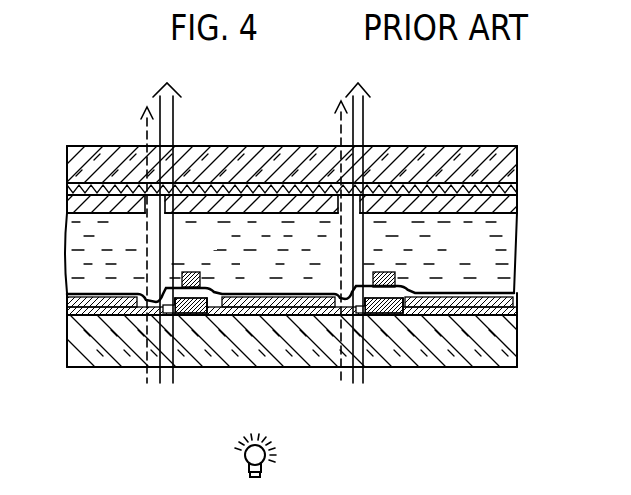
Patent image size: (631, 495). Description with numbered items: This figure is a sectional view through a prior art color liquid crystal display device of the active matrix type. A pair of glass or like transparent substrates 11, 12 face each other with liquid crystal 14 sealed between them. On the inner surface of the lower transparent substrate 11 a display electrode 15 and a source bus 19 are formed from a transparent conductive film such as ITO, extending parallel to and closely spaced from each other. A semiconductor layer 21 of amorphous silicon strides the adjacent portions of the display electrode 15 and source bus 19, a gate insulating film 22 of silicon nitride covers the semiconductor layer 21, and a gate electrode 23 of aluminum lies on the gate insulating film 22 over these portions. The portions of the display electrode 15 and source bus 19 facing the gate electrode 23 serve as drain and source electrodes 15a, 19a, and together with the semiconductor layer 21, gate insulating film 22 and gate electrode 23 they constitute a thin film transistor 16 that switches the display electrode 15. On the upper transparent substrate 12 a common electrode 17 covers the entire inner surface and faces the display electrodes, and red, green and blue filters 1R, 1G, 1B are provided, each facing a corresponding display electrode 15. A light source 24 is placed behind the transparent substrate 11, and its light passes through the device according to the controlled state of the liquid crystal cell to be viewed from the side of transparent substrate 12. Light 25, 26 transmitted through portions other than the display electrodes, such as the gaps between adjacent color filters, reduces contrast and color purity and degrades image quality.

The transparent substrate 11 is at (486, 367).
The transparent substrate 12 is at (481, 147).
The liquid crystal 14 is at (514, 267).
The display electrode 15 is at (300, 320).
The drain electrode 15a is at (226, 318).
The thin film transistor 16 is at (170, 322).
The common electrode 17 is at (518, 190).
The source bus 19 is at (176, 314).
The source electrode 19a is at (285, 364).
The semiconductor layer 21 is at (196, 314).
The gate insulating film 22 is at (250, 291).
The gate electrode 23 is at (196, 270).
The light source 24 is at (274, 455).
The light 25 is at (341, 127).
The light 26 is at (363, 127).
The blue filter 1B is at (120, 213).
The red filter 1R is at (305, 213).
The green filter 1G is at (468, 213).